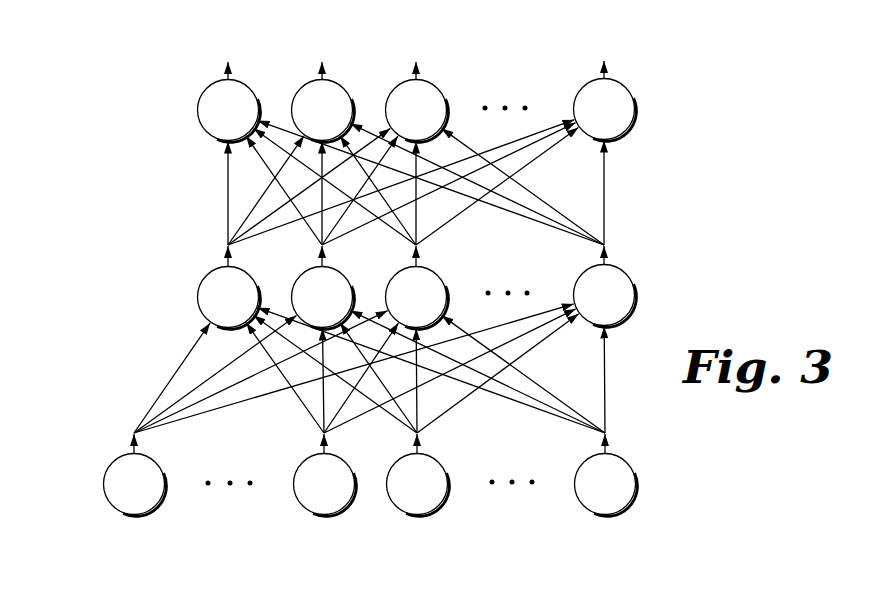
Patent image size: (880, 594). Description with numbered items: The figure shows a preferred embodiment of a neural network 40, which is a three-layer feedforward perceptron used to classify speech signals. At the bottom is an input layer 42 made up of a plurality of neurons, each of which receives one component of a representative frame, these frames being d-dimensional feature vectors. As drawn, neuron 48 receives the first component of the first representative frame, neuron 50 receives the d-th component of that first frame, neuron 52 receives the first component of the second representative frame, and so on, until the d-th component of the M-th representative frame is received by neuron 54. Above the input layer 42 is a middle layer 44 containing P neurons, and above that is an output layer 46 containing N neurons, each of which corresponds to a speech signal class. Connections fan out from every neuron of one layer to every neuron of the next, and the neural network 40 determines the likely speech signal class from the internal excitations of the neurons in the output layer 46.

The neural network 40 is at (721, 158).
The input layer 42 is at (92, 482).
The middle layer 44 is at (189, 298).
The output layer 46 is at (189, 110).
The neuron 48 is at (134, 515).
The neuron 50 is at (324, 515).
The neuron 52 is at (417, 515).
The neuron 54 is at (605, 515).